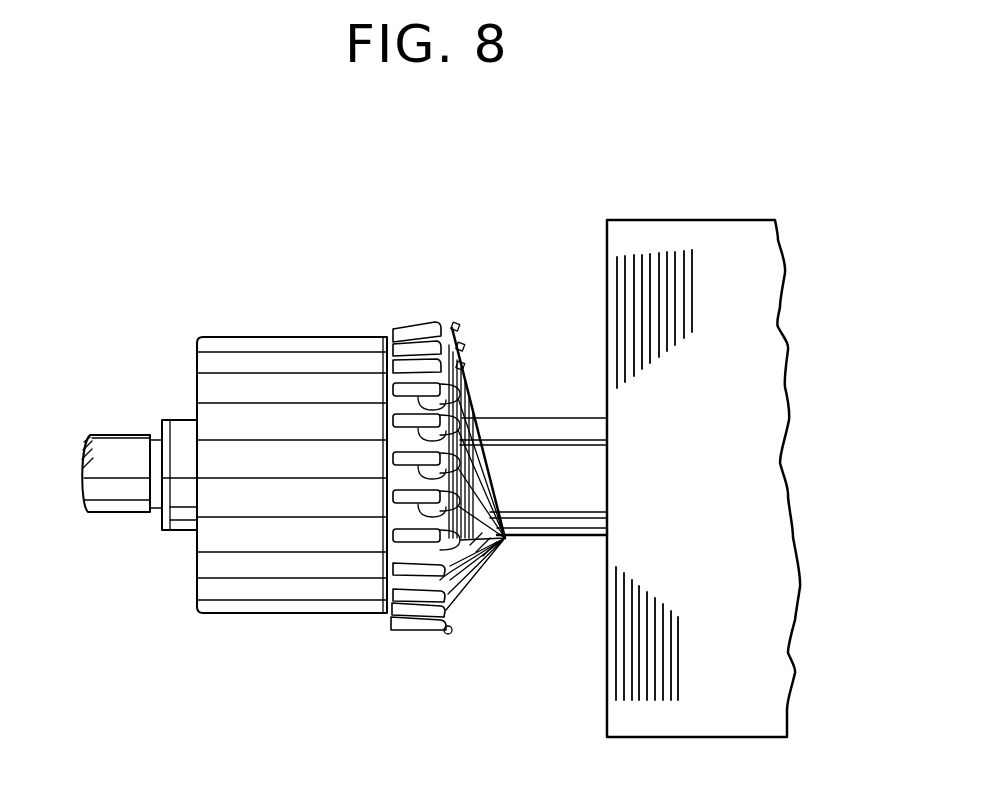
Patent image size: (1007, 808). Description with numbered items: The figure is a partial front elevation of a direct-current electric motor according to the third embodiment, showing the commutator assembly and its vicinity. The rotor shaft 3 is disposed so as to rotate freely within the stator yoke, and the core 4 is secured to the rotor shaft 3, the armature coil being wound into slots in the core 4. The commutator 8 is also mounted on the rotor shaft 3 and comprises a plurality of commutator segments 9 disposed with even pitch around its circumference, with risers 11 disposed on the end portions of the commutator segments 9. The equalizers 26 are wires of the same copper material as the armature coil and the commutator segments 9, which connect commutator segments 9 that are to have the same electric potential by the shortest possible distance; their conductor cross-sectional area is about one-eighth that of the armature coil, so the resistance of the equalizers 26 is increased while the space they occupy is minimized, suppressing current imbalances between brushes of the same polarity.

The rotor shaft 3 is at (542, 523).
The core 4 is at (710, 222).
The commutator 8 is at (336, 367).
The commutator segments 9 is at (284, 343).
The risers 11 is at (413, 633).
The equalizers 26 is at (460, 400).